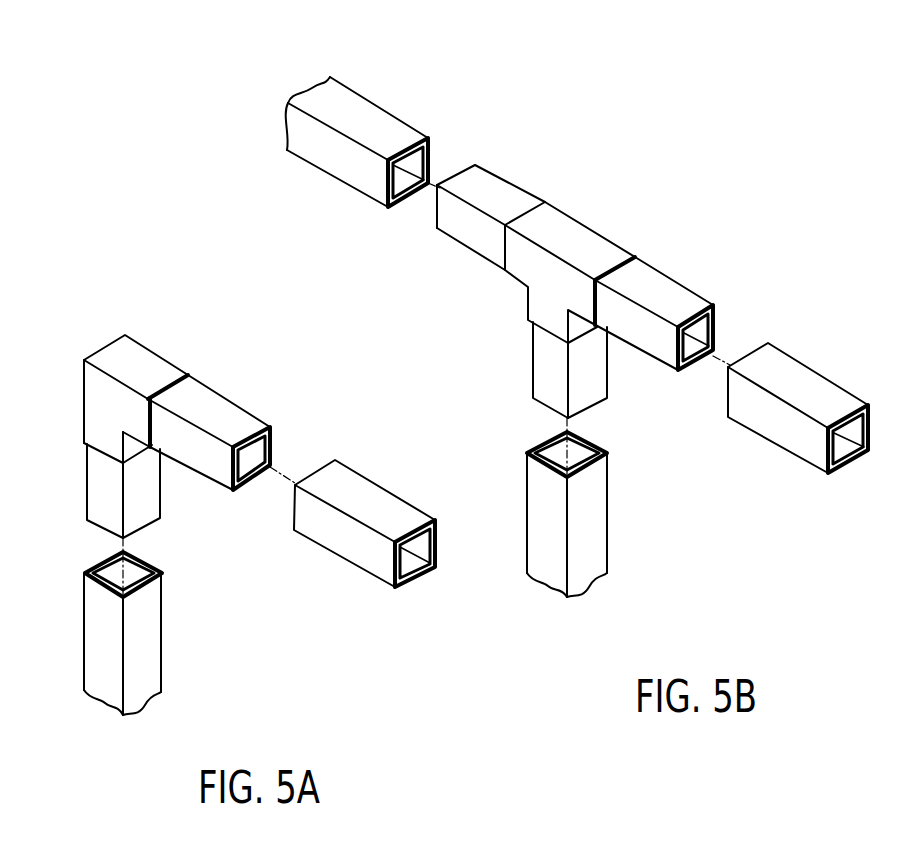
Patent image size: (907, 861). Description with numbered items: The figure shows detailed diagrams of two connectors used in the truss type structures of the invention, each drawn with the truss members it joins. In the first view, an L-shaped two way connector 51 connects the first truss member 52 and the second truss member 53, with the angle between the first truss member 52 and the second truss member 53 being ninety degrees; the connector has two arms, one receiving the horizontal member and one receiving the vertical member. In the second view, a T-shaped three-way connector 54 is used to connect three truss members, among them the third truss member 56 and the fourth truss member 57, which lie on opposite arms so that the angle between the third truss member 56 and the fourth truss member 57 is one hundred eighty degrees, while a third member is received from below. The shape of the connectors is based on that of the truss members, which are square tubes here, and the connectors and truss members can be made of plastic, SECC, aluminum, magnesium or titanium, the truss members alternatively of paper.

In FIG. 5A, the L-shaped two way connector 51 is at (147, 362).
In FIG. 5A, the first truss member 52 is at (375, 508).
In FIG. 5A, the second truss member 53 is at (150, 620).
In FIG. 5B, the T-shaped three-way connector 54 is at (592, 238).
In FIG. 5B, the third truss member 56 is at (797, 372).
In FIG. 5B, the fourth truss member 57 is at (383, 122).